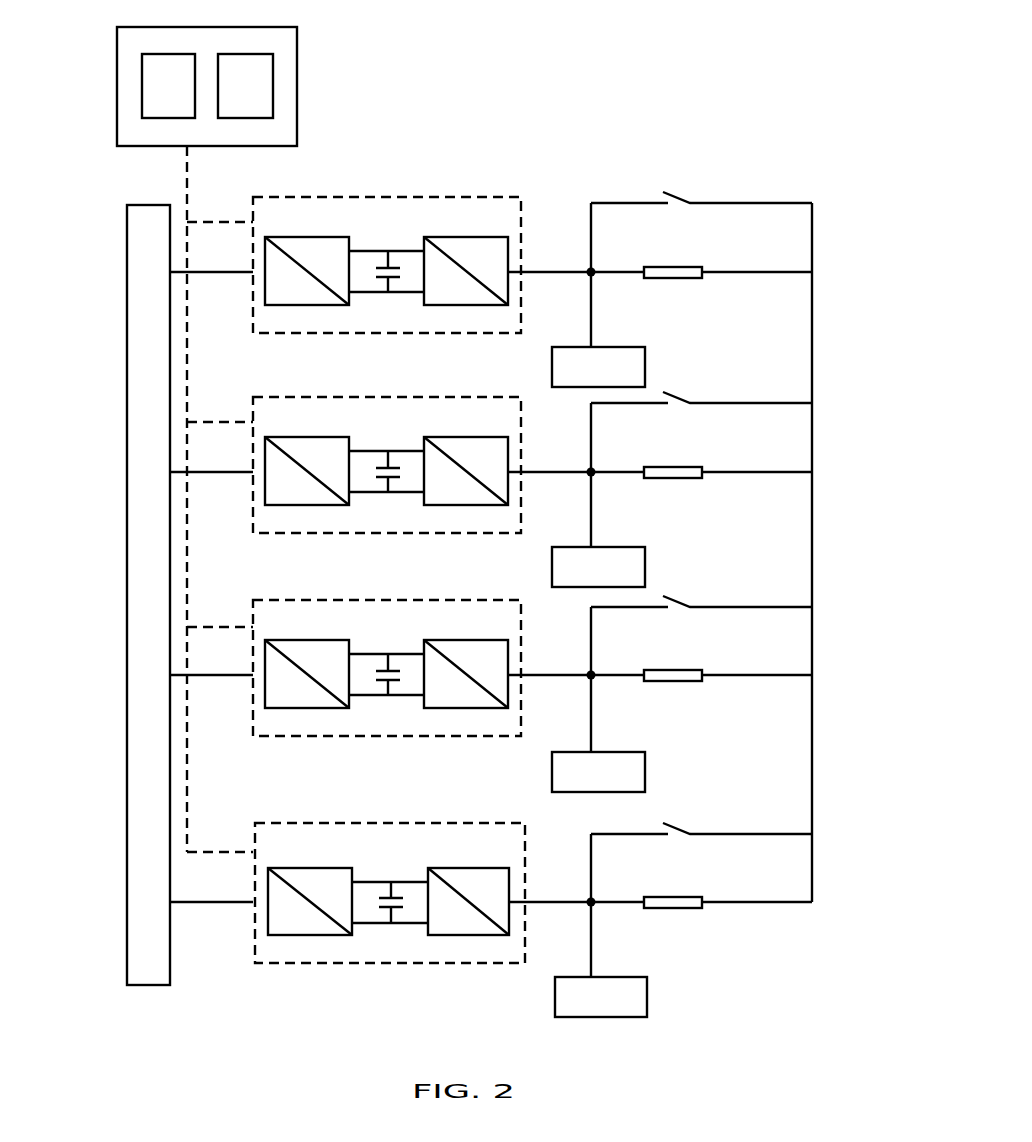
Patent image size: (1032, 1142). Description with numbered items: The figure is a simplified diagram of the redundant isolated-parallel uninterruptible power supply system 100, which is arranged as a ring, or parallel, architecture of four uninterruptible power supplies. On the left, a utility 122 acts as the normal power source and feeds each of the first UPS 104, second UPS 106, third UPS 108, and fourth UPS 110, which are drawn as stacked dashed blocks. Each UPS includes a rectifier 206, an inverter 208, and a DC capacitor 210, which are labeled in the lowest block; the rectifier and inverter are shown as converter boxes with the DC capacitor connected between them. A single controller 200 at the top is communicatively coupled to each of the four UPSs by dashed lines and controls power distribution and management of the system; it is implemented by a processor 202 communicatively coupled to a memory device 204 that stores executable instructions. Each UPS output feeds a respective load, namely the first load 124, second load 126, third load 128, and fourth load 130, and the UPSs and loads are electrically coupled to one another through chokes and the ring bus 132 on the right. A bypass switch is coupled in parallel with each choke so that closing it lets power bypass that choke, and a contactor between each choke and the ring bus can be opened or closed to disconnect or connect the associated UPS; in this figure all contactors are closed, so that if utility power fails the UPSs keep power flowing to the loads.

The redundant isolated-parallel uninterruptible power supply system 100 is at (756, 58).
The first UPS 104 is at (430, 196).
The second UPS 106 is at (430, 396).
The third UPS 108 is at (430, 599).
The fourth UPS 110 is at (390, 870).
The utility 122 is at (126, 362).
The first load 124 is at (637, 346).
The second load 126 is at (637, 546).
The third load 128 is at (637, 751).
The fourth load 130 is at (640, 976).
The ring bus 132 is at (813, 352).
The controller 200 is at (246, 439).
The processor 202 is at (190, 98).
The memory device 204 is at (267, 98).
The rectifier 206 is at (324, 855).
The inverter 208 is at (389, 888).
The DC capacitor 210 is at (489, 868).